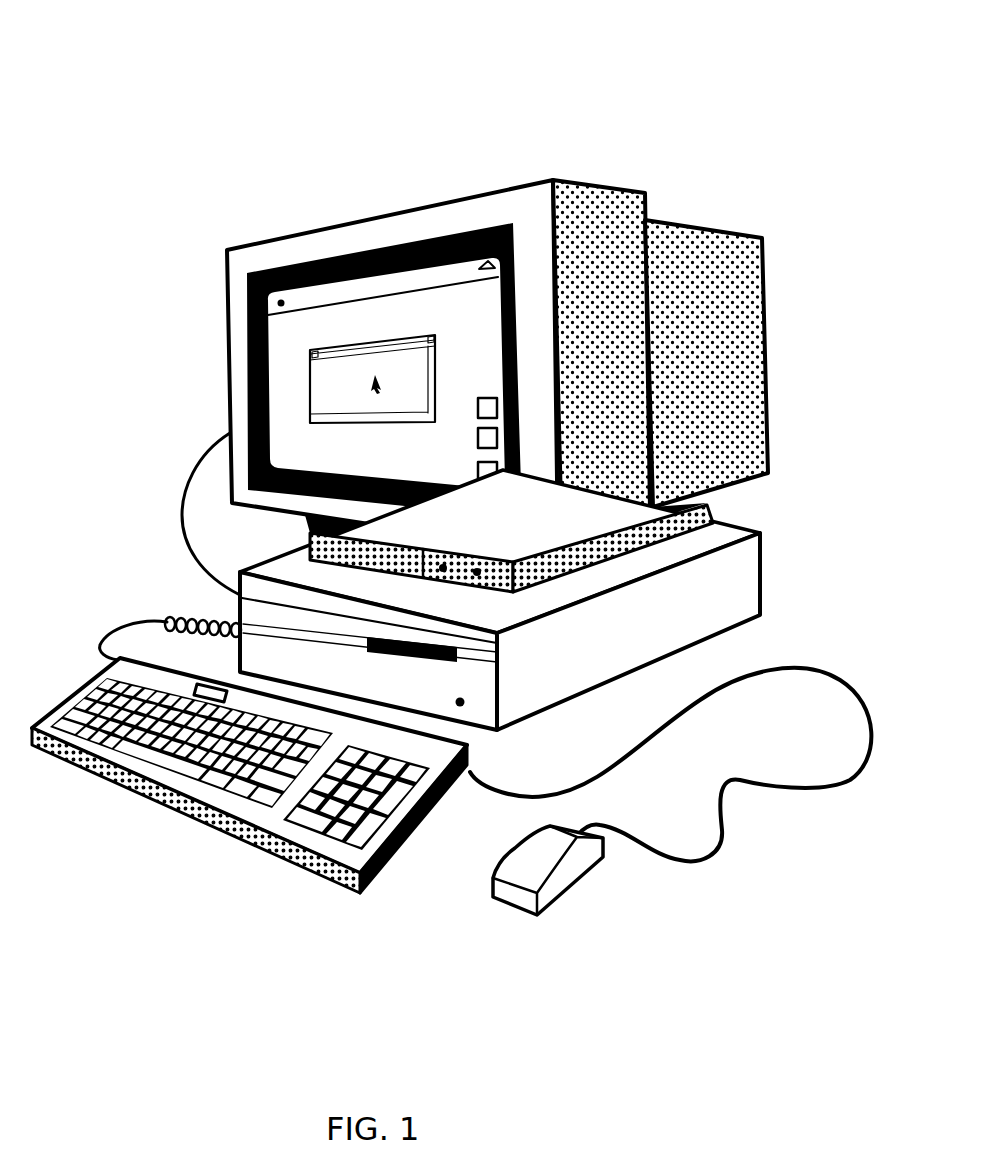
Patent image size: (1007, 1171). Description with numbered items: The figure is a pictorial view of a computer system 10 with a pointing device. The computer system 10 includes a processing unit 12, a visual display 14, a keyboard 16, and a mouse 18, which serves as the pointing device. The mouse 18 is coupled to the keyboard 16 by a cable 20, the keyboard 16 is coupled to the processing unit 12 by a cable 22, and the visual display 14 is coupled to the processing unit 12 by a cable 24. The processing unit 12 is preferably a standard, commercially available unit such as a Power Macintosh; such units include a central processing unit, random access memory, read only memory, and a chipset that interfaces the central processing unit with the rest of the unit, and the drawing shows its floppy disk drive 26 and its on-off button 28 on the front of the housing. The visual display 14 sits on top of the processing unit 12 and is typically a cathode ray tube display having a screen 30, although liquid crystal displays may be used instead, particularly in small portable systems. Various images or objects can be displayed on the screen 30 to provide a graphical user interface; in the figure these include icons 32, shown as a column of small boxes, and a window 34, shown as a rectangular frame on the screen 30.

The computer system 10 is at (632, 108).
The processing unit 12 is at (533, 600).
The visual display 14 is at (497, 348).
The keyboard 16 is at (473, 758).
The mouse 18 is at (584, 893).
The cable 20 is at (730, 787).
The cable 22 is at (160, 620).
The cable 24 is at (180, 507).
The floppy disk drive 26 is at (378, 654).
The on-off button 28 is at (455, 702).
The screen 30 is at (488, 323).
The icons 32 is at (477, 472).
The window 34 is at (313, 425).